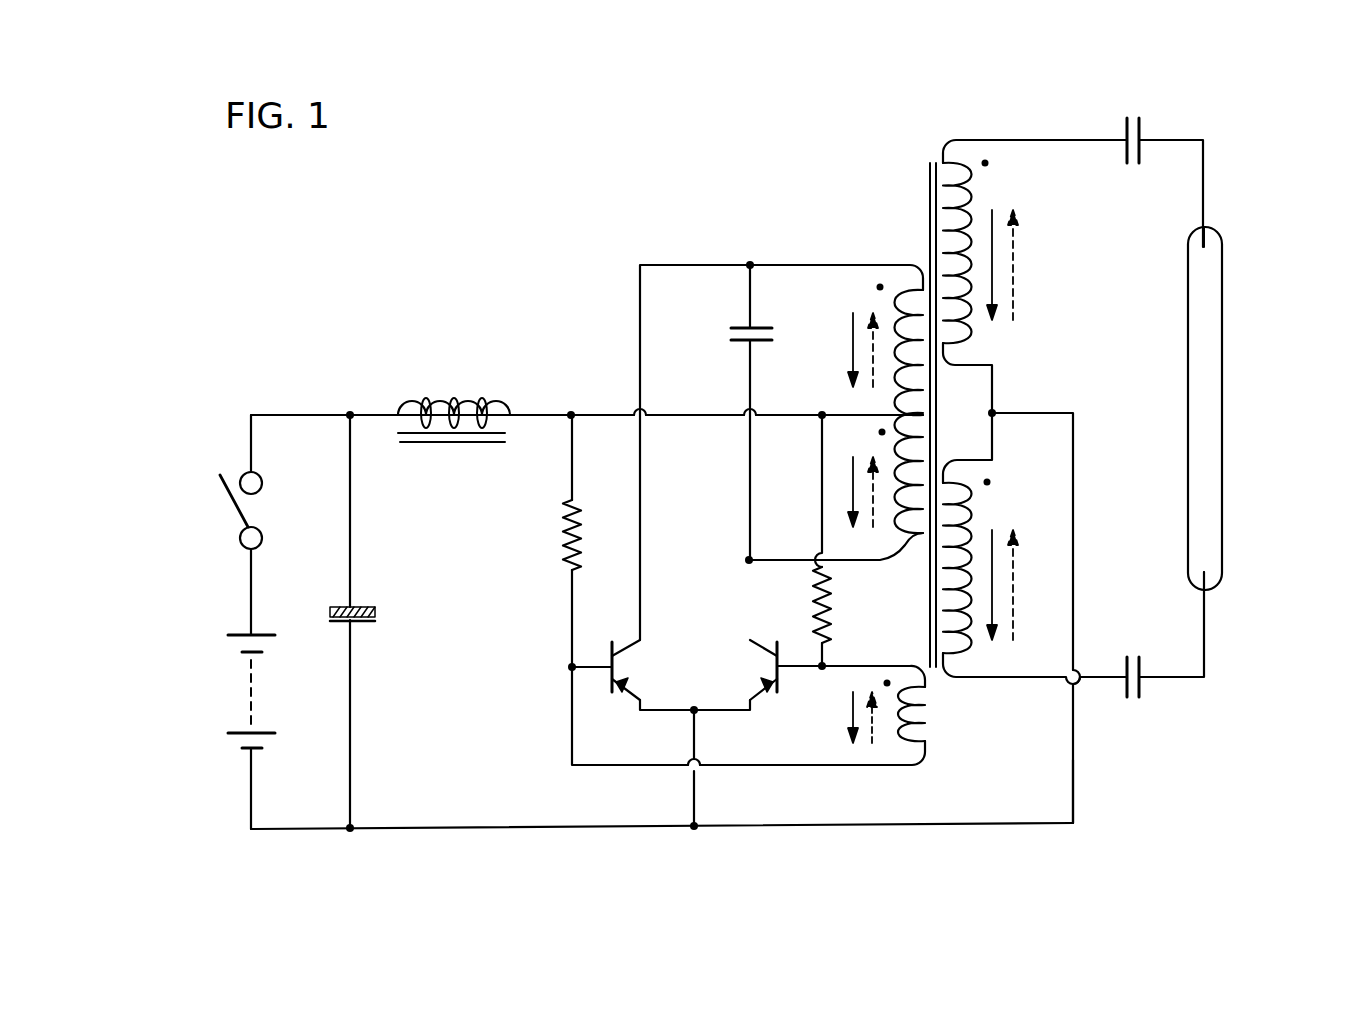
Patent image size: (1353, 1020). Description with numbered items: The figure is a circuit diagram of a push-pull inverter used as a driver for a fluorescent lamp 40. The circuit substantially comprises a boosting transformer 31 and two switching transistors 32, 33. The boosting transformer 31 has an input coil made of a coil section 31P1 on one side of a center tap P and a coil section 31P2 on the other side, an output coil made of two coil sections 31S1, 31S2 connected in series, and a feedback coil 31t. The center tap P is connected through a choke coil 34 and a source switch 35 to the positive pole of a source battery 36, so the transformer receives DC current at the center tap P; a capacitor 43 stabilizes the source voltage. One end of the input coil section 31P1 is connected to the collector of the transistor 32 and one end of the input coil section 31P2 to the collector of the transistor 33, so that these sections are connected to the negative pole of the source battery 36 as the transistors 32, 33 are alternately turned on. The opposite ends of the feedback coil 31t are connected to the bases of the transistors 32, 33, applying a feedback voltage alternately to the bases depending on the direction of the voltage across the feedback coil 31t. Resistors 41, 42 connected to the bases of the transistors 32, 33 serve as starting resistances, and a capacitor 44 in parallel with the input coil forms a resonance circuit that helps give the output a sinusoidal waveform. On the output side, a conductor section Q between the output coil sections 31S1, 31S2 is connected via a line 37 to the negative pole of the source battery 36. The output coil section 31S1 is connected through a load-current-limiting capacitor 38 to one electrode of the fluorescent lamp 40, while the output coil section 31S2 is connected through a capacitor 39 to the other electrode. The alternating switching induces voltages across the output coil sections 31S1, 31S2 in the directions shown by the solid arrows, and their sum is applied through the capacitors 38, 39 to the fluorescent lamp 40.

The boosting transformer 31 is at (930, 163).
The input coil section 31P1 is at (897, 265).
The input coil section 31P2 is at (890, 563).
The output coil section 31S1 is at (970, 185).
The output coil section 31S2 is at (967, 515).
The feedback coil 31t is at (925, 707).
The switching transistor 32 is at (628, 690).
The switching transistor 33 is at (787, 683).
The choke coil 34 is at (452, 399).
The source switch 35 is at (235, 512).
The source battery 36 is at (250, 698).
The line 37 is at (1075, 755).
The capacitor for load current limiting 38 is at (1125, 123).
The capacitor for load current limiting 39 is at (1140, 657).
The fluorescent lamp 40 is at (1203, 403).
The resistor 41 is at (558, 540).
The resistor 42 is at (820, 612).
The capacitor 43 is at (377, 612).
The capacitor 44 is at (730, 333).
The center tap P is at (897, 413).
The conductor section Q is at (992, 413).